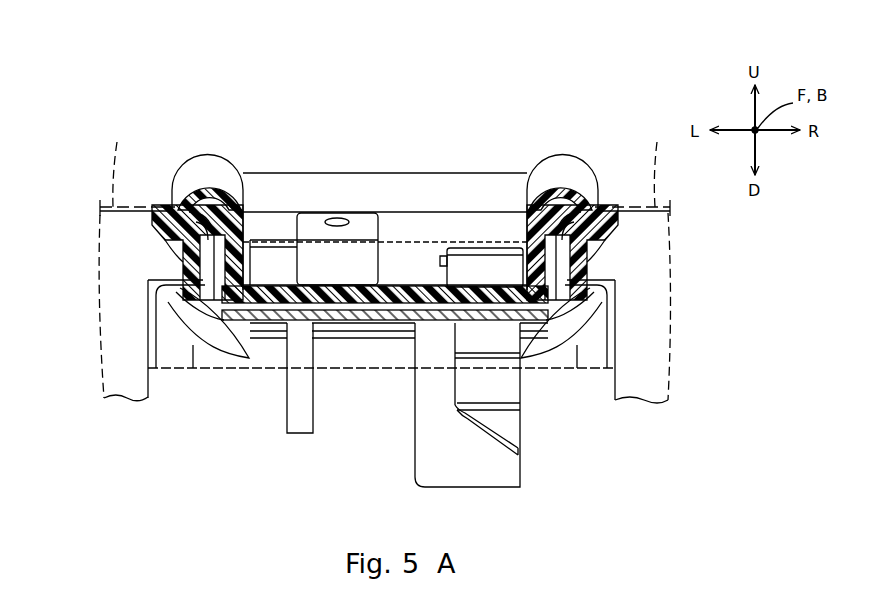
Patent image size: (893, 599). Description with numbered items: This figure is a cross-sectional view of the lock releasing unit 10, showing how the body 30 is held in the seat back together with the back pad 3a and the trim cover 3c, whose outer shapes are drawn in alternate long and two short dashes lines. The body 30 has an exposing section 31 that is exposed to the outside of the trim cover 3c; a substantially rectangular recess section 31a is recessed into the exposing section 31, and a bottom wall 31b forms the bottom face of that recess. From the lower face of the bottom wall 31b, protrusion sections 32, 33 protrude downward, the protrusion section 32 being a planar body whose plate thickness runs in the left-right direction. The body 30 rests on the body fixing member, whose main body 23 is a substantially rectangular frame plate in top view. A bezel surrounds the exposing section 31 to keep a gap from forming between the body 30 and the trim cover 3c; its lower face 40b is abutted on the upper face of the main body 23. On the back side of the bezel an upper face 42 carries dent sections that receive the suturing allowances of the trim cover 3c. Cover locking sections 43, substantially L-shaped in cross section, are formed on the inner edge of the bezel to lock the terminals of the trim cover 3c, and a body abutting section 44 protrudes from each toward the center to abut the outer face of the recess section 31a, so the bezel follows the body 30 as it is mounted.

The vehicle interior component / assembly 10 is at (593, 78).
The body 30 is at (477, 105).
The exposing section 31 is at (207, 172).
The recess section 31a is at (250, 248).
The bottom wall 31b is at (407, 278).
The upper face 42 is at (190, 213).
The cover locking section 43 is at (220, 260).
The body abutting section 44 is at (297, 243).
The lower face 40b is at (200, 292).
The main body 23 is at (353, 320).
The protrusion section 32 is at (300, 435).
The protrusion section 33 is at (425, 460).
The back pad 3a is at (93, 370).
The trim cover 3c is at (386, 162).